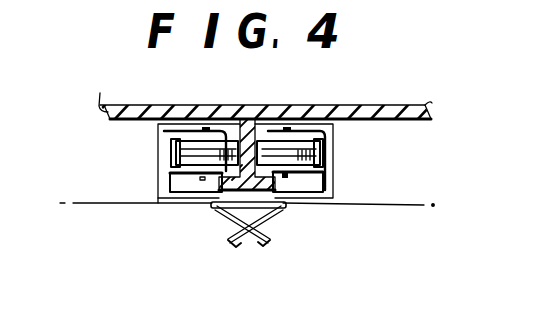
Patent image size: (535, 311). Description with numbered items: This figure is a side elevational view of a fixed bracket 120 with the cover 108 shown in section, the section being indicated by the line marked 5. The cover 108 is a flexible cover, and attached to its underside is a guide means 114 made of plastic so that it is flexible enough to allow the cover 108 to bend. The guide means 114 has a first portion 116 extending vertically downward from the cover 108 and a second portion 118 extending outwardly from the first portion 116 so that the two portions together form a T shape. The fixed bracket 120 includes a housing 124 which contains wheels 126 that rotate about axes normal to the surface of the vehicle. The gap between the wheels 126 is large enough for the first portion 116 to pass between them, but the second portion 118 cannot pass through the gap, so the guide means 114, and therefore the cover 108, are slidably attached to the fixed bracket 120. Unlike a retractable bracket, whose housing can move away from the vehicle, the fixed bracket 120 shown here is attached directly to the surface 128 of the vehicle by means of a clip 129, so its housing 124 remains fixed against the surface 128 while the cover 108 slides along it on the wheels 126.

The section line 5- 5 is at (83, 122).
The cover 108 is at (322, 112).
The guide means 114 is at (294, 187).
The first portion 116 is at (255, 133).
The second portion 118 is at (216, 205).
The fixed bracket 120 is at (157, 212).
The housing 124 is at (347, 198).
The wheels 126 is at (172, 157).
The surface 128 is at (82, 204).
The clip 129 is at (263, 238).